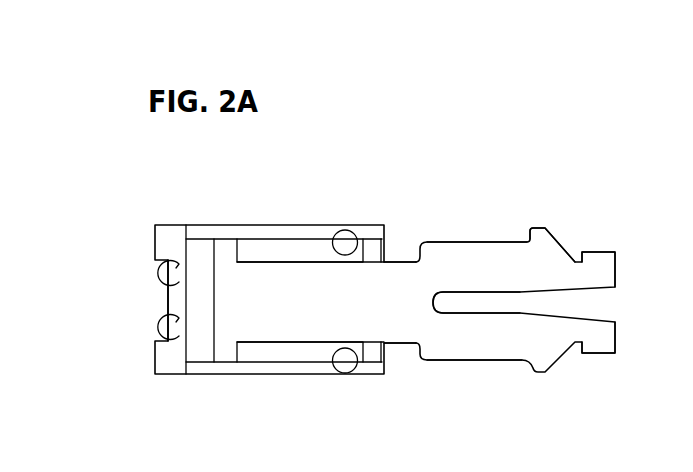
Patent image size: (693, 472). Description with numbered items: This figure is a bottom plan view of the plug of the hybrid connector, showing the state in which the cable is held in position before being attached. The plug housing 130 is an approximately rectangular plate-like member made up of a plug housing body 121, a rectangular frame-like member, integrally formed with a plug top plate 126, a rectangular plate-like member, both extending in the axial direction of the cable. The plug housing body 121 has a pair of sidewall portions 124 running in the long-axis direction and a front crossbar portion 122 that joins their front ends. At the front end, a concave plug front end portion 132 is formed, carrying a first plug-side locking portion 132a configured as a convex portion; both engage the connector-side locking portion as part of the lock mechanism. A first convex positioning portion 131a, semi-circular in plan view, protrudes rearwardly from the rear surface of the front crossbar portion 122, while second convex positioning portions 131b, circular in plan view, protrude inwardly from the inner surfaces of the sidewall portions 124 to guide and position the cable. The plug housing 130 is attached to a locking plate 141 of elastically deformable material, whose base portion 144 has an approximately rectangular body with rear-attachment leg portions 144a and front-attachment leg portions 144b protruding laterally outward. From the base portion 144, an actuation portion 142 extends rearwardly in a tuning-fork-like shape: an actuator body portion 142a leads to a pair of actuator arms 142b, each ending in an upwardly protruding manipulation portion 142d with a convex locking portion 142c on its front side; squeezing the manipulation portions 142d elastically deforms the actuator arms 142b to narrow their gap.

The plug housing body 121 is at (170, 378).
The front crossbar portion 122 is at (175, 226).
The sidewall portions 124 is at (268, 229).
The plug top plate 126 is at (262, 352).
The plug housing 130 is at (298, 377).
The first convex positioning portion 131a is at (190, 340).
The second convex positioning portions 131b is at (345, 375).
The concave plug front end portion 132 is at (160, 277).
The first plug-side locking portion 132a is at (167, 305).
The locking plate 141 is at (417, 240).
The actuation portion 142 is at (422, 337).
The actuator body portion 142a is at (430, 287).
The actuator arms 142b is at (503, 258).
The convex locking portion 142c is at (540, 229).
The manipulation portion 142d is at (598, 252).
The base portion 144 is at (302, 280).
The rear-attachment leg portions 144a is at (377, 282).
The front-attachment leg portions 144b is at (232, 245).